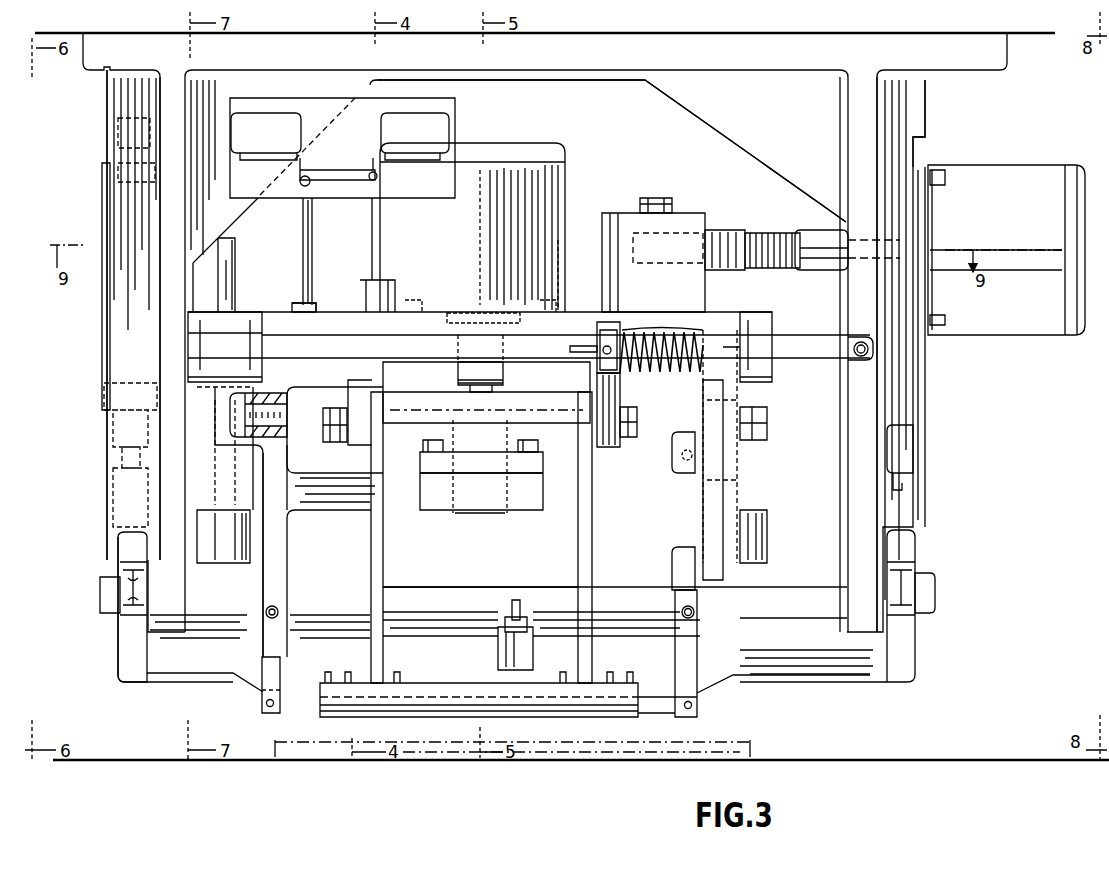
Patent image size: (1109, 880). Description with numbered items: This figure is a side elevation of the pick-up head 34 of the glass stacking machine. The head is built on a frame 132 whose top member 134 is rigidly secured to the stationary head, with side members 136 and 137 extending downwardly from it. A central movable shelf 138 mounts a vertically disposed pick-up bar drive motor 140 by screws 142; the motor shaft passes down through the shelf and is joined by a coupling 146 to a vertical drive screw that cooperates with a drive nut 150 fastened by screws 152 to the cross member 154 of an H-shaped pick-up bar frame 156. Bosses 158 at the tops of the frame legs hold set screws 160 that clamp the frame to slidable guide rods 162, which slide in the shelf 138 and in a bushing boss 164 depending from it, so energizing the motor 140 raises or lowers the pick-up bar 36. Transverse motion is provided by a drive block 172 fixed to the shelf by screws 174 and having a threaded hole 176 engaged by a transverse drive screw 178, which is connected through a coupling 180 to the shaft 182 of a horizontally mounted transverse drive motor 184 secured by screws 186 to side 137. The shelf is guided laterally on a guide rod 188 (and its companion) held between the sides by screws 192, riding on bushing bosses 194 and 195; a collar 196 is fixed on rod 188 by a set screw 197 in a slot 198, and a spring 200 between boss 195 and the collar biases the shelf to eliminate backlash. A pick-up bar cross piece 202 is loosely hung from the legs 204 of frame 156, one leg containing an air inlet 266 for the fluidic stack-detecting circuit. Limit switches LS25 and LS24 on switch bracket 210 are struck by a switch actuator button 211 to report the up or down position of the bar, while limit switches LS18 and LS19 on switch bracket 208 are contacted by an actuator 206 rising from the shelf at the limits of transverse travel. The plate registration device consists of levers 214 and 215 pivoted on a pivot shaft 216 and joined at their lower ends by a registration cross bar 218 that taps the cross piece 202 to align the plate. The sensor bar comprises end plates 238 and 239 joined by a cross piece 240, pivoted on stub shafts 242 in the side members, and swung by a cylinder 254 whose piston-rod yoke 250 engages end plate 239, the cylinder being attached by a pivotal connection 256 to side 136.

The pick-up head 34 is at (952, 124).
The pick-up bar 36 is at (462, 690).
The frame 132 is at (655, 82).
The top member 134 is at (524, 80).
The side member 136 is at (165, 303).
The side member 137 is at (870, 407).
The central movable shelf 138 is at (320, 308).
The pick-up bar drive motor 140 is at (565, 185).
The screws 142 is at (560, 262).
The coupling 146 is at (463, 377).
The drive nut 150 is at (440, 462).
The screws 152 is at (538, 460).
The cross member 154 is at (332, 473).
The H-shaped pick-up bar frame 156 is at (290, 565).
The bosses 158 is at (270, 432).
The adjusting screw 160 is at (285, 395).
The guide rods 162 is at (233, 292).
The bushing boss 164 is at (245, 563).
The transverse drive block 172 is at (690, 214).
The screws 174 is at (660, 198).
The threaded hole 176 is at (620, 263).
The transverse drive screw 178 is at (765, 238).
The coupling 180 is at (835, 232).
The shaft 182 is at (900, 232).
The transverse drive motor 184 is at (1045, 165).
The screws 186 is at (940, 175).
The guide rod 188 is at (830, 335).
The screws 192 is at (857, 355).
The bushing boss 194 is at (253, 312).
The bushing boss 195 is at (775, 318).
The collar 196 is at (597, 325).
The set screw 197 is at (622, 375).
The slot 198 is at (570, 347).
The spring 200 is at (660, 322).
The pick-up bar cross piece 202 is at (660, 697).
The legs 204 is at (280, 675).
The actuator 206 is at (311, 255).
The switch bracket 208 is at (372, 128).
The switch bracket 210 is at (703, 497).
The switch actuator button 211 is at (682, 460).
The lever 214 is at (383, 556).
The lever 215 is at (578, 548).
The pivot shaft 216 is at (545, 400).
The registration cross bar 218 is at (500, 683).
The end plate 238 is at (917, 655).
The end plate 239 is at (118, 657).
The cross piece 240 is at (476, 592).
The stub shafts 242 is at (935, 580).
The yoke 250 is at (112, 497).
The cylinder 254 is at (102, 210).
The pivotal connection 256 is at (115, 133).
The air inlet 266 is at (275, 607).
The limit switch LS18 is at (266, 136).
The limit switch LS19 is at (415, 136).
The limit switch LS24 is at (672, 555).
The limit switch LS25 is at (672, 455).